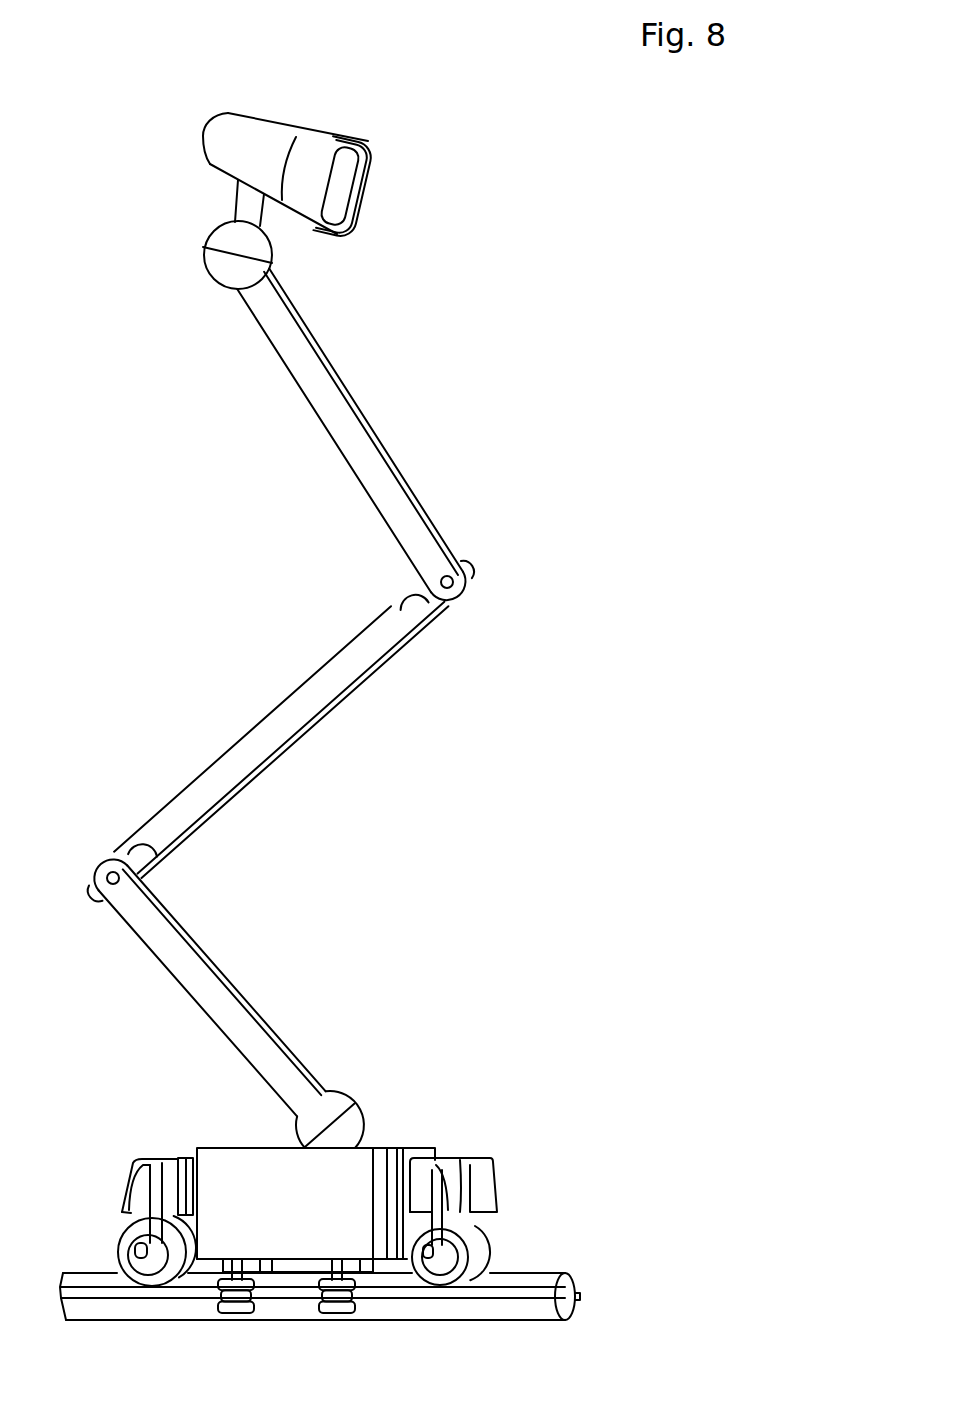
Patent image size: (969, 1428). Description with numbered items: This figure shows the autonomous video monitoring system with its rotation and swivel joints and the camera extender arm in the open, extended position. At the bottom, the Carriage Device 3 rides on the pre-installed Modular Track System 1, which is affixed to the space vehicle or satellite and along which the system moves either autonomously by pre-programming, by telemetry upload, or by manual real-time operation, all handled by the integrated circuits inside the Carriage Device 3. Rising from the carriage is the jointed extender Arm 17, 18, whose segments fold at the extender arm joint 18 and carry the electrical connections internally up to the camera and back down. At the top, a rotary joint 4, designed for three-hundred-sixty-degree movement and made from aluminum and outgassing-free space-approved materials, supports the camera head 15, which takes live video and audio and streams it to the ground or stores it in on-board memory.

The Modular Track System 1 is at (523, 1280).
The Carriage Device 3 is at (235, 1180).
The rotary joint 4 is at (242, 248).
The camera head 15 is at (218, 158).
The extender arm 17 is at (383, 497).
The extender arm joint 18 is at (119, 878).